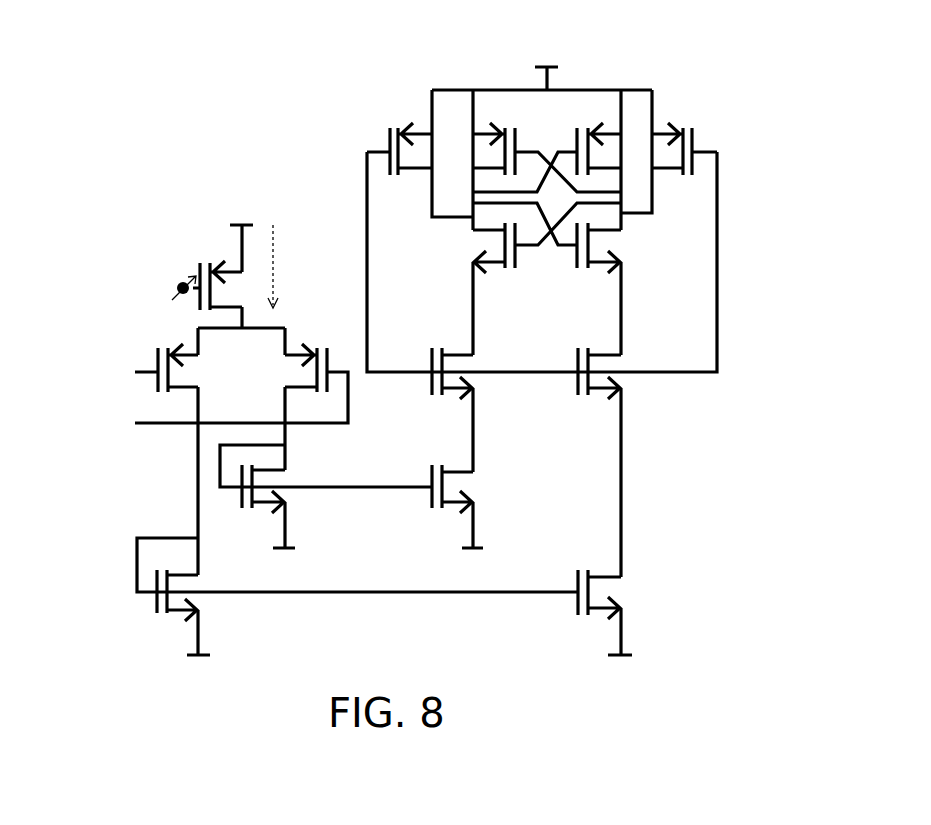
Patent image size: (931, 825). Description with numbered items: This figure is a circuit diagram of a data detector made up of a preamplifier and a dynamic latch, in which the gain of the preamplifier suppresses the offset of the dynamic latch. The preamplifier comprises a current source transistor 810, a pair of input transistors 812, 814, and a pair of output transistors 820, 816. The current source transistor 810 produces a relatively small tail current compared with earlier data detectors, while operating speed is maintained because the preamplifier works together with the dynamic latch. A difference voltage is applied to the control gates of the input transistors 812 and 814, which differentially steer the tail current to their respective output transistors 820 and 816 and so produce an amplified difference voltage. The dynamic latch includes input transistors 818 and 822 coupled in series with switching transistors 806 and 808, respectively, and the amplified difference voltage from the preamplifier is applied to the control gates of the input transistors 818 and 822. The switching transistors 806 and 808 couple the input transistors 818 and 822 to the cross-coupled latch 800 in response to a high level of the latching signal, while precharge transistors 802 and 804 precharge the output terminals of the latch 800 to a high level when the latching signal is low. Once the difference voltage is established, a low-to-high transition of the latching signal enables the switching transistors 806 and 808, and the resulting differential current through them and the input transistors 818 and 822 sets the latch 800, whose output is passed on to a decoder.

The cross-coupled latch 800 is at (613, 71).
The precharge transistor 802 is at (388, 136).
The precharge transistor 804 is at (698, 141).
The switching transistor 806 is at (427, 360).
The switching transistor 808 is at (575, 386).
The current source transistor 810 is at (197, 265).
The input transistor 812 is at (157, 353).
The input transistor 814 is at (328, 387).
The output transistor 816 is at (238, 508).
The input transistor 818 is at (430, 506).
The output transistor 820 is at (153, 607).
The input transistor 822 is at (573, 604).